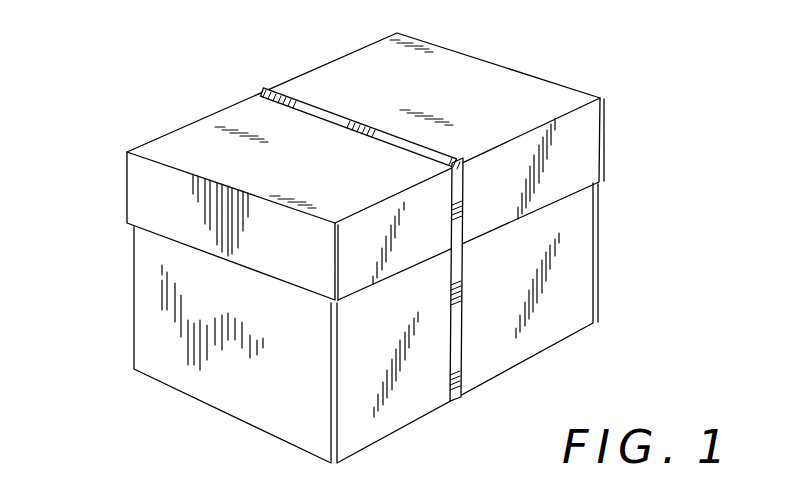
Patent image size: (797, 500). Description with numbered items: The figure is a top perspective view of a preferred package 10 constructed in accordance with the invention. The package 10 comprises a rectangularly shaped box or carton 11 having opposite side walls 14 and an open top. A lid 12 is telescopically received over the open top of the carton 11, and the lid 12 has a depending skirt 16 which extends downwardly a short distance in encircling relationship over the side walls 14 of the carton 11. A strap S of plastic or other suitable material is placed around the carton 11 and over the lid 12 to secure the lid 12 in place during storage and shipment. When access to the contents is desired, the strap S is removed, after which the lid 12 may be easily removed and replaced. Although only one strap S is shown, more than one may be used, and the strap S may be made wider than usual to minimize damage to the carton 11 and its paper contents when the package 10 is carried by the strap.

The package 10 is at (122, 290).
The box or carton 11 is at (198, 400).
The lid 12 is at (605, 145).
The side walls 14 is at (317, 428).
The depending skirt 16 is at (547, 190).
The strap S is at (337, 117).